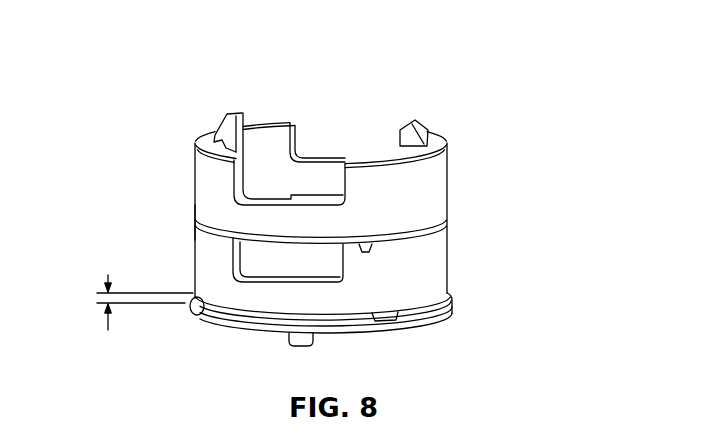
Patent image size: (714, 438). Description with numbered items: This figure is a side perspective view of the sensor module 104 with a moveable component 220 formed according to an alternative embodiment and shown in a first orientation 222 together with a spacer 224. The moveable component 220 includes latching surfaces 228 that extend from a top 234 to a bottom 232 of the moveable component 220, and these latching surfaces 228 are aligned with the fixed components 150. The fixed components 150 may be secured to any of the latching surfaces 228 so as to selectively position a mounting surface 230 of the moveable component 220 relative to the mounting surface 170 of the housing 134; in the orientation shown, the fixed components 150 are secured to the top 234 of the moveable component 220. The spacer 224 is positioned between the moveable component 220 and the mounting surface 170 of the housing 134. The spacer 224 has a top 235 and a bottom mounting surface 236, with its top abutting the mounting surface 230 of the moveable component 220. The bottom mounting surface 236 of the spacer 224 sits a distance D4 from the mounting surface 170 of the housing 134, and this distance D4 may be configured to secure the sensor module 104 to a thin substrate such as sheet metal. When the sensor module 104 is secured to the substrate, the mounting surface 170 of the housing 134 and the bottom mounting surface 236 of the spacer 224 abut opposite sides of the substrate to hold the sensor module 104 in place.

The sensor module 104 is at (468, 62).
The first orientation 222 is at (181, 103).
The moveable component 220 is at (453, 145).
The spacer 224 is at (453, 222).
The bottom 232 is at (441, 229).
The fixed components 150 is at (237, 114).
The latching surfaces 228 is at (250, 133).
The mounting surface 230 is at (368, 240).
The top 234 is at (429, 110).
The top 235 is at (194, 222).
The mounting surface 170 is at (446, 304).
The bottom mounting surface 236 is at (203, 318).
The housing 134 is at (377, 320).
The distance D4 is at (107, 275).